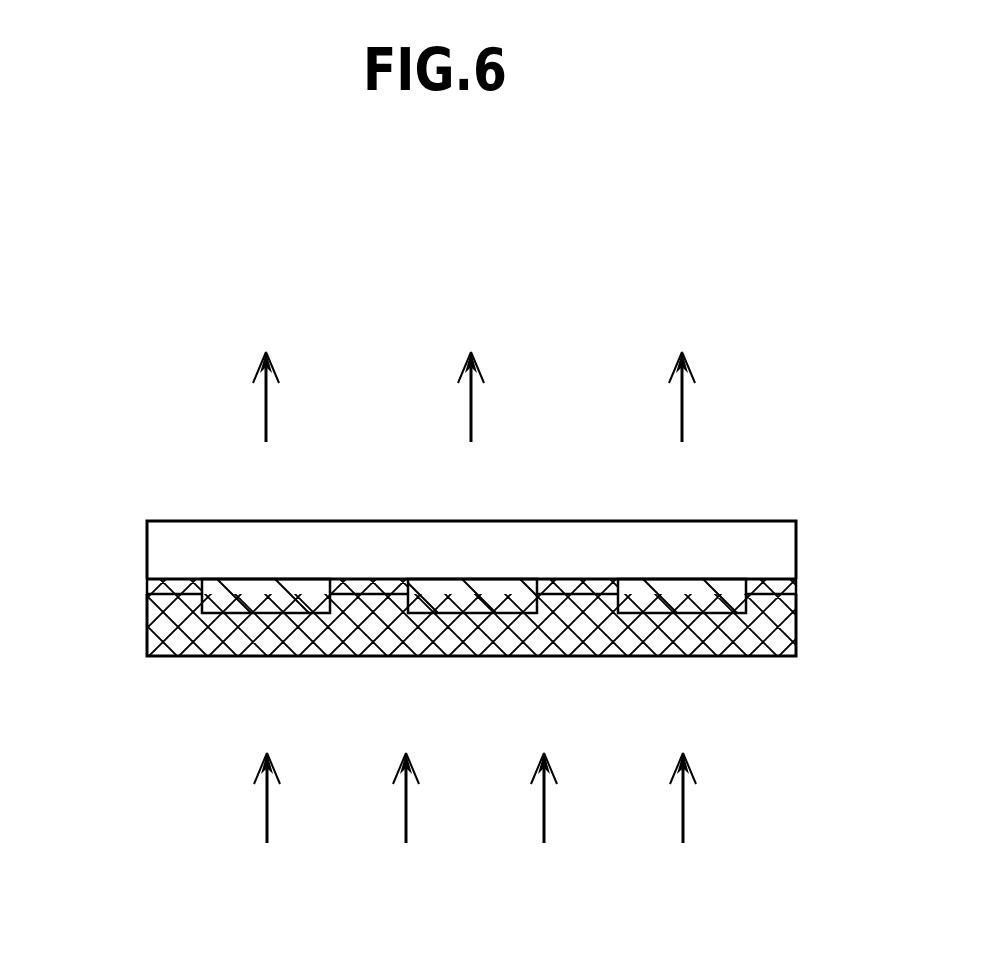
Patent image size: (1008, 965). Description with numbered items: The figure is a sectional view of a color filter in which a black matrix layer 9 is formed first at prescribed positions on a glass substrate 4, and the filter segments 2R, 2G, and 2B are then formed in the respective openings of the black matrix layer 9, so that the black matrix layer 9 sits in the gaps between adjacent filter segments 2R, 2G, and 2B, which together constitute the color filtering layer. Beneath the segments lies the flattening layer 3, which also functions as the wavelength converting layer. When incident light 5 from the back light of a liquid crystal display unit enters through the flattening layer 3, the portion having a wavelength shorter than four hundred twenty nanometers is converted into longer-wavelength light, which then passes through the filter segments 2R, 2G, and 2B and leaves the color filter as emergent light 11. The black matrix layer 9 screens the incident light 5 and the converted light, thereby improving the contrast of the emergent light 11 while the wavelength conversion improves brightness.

The emergent light 11 is at (474, 356).
The incident light 5 is at (475, 839).
The glass substrate 4 is at (187, 560).
The black matrix layer 9 is at (773, 583).
The flattening layer 3 is at (773, 627).
The filter segment 2G is at (272, 595).
The filter segment 2R is at (457, 595).
The filter segment 2B is at (677, 593).